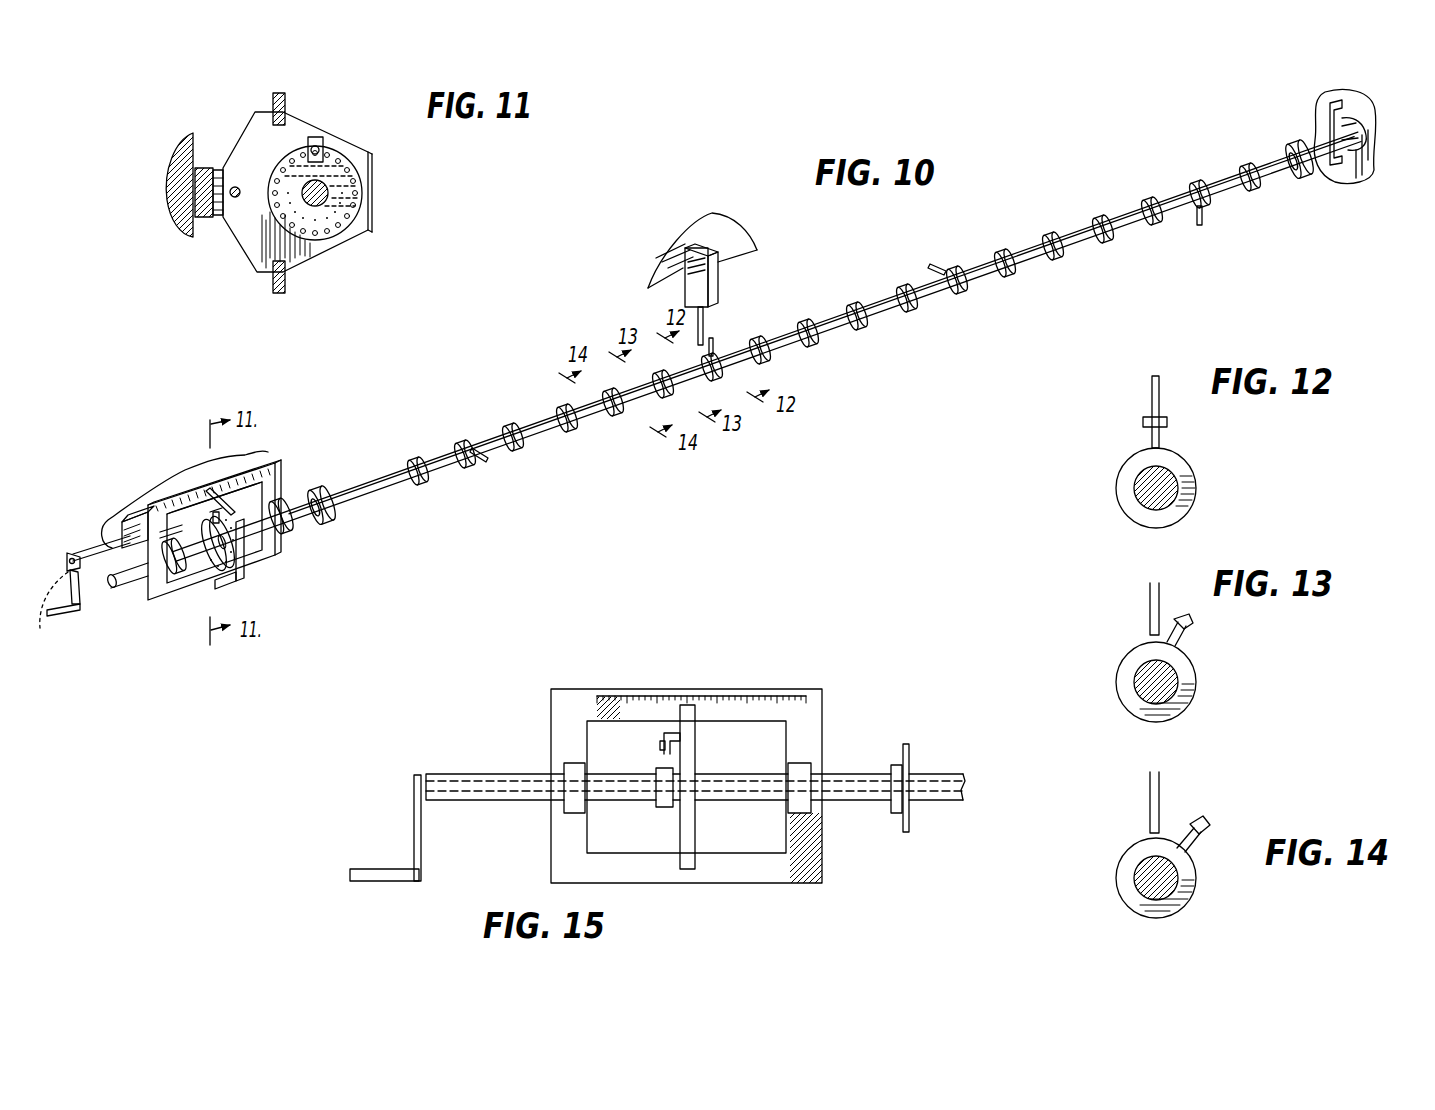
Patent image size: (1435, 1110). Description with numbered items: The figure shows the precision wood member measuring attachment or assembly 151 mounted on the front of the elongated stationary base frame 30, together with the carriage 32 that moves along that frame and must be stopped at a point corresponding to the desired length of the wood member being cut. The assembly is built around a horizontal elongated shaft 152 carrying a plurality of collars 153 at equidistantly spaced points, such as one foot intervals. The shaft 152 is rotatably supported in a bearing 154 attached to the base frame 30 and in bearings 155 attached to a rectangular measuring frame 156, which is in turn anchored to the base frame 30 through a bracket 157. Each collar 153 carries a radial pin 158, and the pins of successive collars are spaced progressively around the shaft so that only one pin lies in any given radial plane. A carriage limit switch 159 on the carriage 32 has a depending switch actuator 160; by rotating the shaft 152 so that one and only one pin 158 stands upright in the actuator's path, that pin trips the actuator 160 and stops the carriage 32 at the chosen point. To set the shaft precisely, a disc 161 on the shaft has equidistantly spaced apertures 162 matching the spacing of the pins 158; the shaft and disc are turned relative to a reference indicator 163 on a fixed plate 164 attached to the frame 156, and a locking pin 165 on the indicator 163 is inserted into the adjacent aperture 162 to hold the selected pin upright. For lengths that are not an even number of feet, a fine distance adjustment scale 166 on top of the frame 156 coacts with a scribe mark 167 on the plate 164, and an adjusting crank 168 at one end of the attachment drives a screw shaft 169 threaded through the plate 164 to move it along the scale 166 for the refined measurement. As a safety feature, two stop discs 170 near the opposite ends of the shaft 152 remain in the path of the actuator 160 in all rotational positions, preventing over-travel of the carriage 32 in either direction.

In FIG. 10, the base frame 30 is at (1366, 112).
In FIG. 11, the base frame 30 is at (178, 178).
In FIG. 10, the carriage 32 is at (722, 240).
In FIG. 10, the measuring attachment 151 is at (823, 318).
In FIG. 10, the shaft 152 is at (977, 285).
In FIG. 11, the shaft 152 is at (330, 193).
In FIG. 12, the shaft 152 is at (1181, 488).
In FIG. 13, the shaft 152 is at (1178, 689).
In FIG. 14, the shaft 152 is at (1180, 894).
In FIG. 15, the shaft 152 is at (928, 773).
In FIG. 10, the collars 153 is at (425, 462).
In FIG. 12, the collars 153 is at (1122, 514).
In FIG. 13, the collars 153 is at (1117, 671).
In FIG. 14, the collars 153 is at (1118, 905).
In FIG. 10, the bearing 154 is at (1365, 150).
In FIG. 10, the bearings 155 is at (185, 566).
In FIG. 15, the bearings 155 is at (568, 800).
In FIG. 10, the measuring frame 156 is at (276, 487).
In FIG. 11, the measuring frame 156 is at (285, 102).
In FIG. 15, the measuring frame 156 is at (823, 717).
In FIG. 10, the bracket 157 is at (138, 520).
In FIG. 11, the bracket 157 is at (205, 218).
In FIG. 10, the radial pin 158 is at (713, 342).
In FIG. 12, the radial pin 158 is at (1168, 426).
In FIG. 13, the radial pin 158 is at (1186, 641).
In FIG. 14, the radial pin 158 is at (1201, 823).
In FIG. 10, the carriage limit switch 159 is at (684, 270).
In FIG. 10, the switch actuator 160 is at (705, 332).
In FIG. 12, the switch actuator 160 is at (1150, 395).
In FIG. 13, the switch actuator 160 is at (1148, 602).
In FIG. 14, the switch actuator 160 is at (1148, 797).
In FIG. 10, the disc 161 is at (240, 557).
In FIG. 11, the disc 161 is at (338, 218).
In FIG. 15, the disc 161 is at (664, 807).
In FIG. 11, the apertures 162 is at (290, 160).
In FIG. 10, the reference indicator 163 is at (212, 506).
In FIG. 11, the reference indicator 163 is at (324, 150).
In FIG. 15, the reference indicator 163 is at (666, 733).
In FIG. 10, the fixed plate 164 is at (248, 546).
In FIG. 11, the fixed plate 164 is at (312, 253).
In FIG. 15, the fixed plate 164 is at (703, 724).
In FIG. 11, the locking pin 165 is at (318, 148).
In FIG. 15, the locking pin 165 is at (660, 745).
In FIG. 10, the fine distance adjustment scale 166 is at (264, 463).
In FIG. 15, the fine distance adjustment scale 166 is at (800, 695).
In FIG. 15, the scribe mark 167 is at (686, 705).
In FIG. 10, the adjusting crank 168 is at (60, 605).
In FIG. 15, the adjusting crank 168 is at (413, 834).
In FIG. 10, the screw shaft 169 is at (110, 549).
In FIG. 11, the screw shaft 169 is at (237, 198).
In FIG. 15, the screw shaft 169 is at (510, 786).
In FIG. 10, the stop discs 170 is at (338, 512).